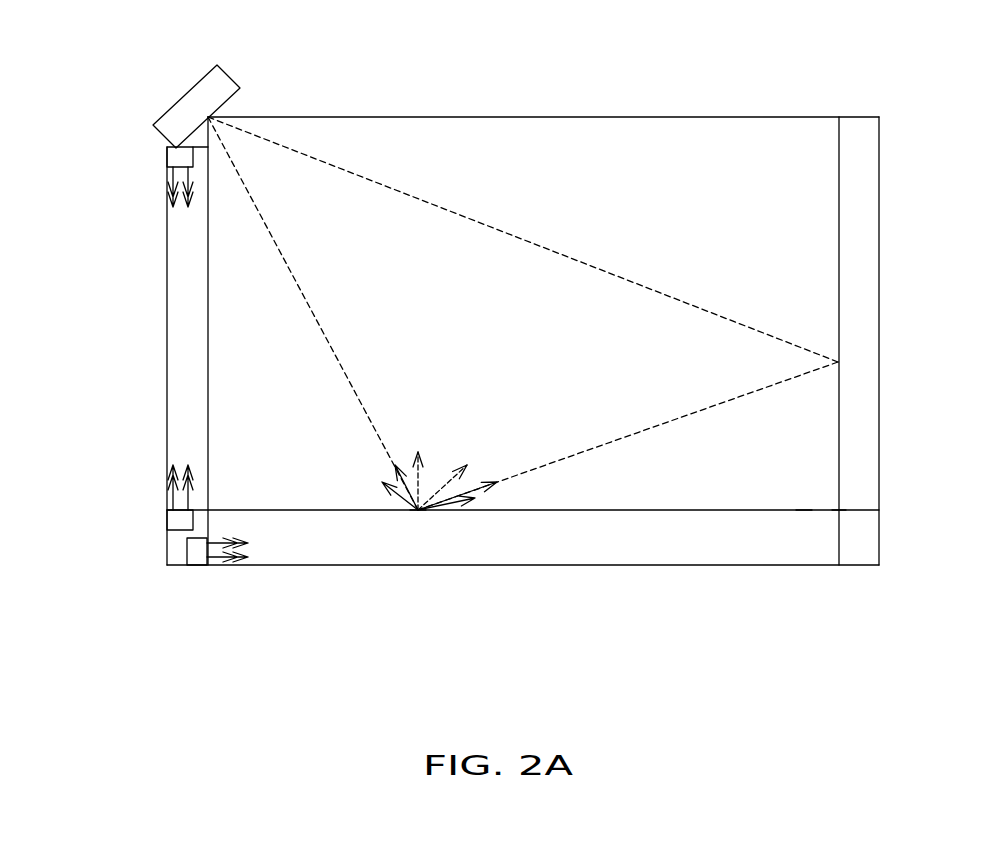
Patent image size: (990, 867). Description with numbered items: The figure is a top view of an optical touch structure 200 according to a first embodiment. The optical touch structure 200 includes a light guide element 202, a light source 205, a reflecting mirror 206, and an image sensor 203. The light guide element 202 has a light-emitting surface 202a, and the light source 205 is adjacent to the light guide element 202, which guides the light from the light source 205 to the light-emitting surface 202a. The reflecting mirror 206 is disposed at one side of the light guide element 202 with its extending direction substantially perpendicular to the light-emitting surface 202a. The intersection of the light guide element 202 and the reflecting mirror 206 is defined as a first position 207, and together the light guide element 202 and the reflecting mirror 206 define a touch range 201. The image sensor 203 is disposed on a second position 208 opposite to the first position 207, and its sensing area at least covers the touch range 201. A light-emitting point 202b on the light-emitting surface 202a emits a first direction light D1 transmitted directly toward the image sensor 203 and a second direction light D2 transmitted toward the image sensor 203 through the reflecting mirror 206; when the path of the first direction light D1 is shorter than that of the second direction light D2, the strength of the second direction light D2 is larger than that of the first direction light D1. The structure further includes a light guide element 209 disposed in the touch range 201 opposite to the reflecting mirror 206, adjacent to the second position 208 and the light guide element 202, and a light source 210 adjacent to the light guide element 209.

The optical touch structure 200 is at (780, 83).
The touch range 201 is at (520, 117).
The light guide element 202 is at (517, 553).
The light-emitting surface 202a is at (803, 509).
The light-emitting point 202b is at (418, 514).
The image sensor 203 is at (178, 108).
The light source 205 is at (198, 562).
The reflecting mirror 206 is at (862, 218).
The first position 207 is at (841, 514).
The second position 208 is at (208, 118).
The light guide element 209 is at (178, 342).
The light source 210 is at (168, 153).
The first direction light D1 is at (385, 475).
The second direction light D2 is at (474, 487).